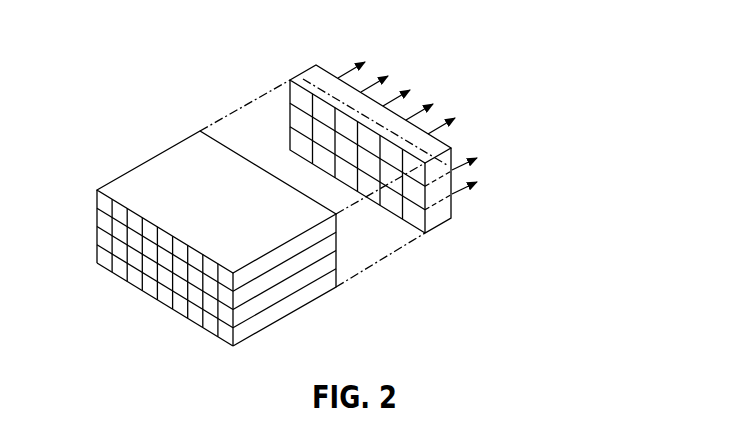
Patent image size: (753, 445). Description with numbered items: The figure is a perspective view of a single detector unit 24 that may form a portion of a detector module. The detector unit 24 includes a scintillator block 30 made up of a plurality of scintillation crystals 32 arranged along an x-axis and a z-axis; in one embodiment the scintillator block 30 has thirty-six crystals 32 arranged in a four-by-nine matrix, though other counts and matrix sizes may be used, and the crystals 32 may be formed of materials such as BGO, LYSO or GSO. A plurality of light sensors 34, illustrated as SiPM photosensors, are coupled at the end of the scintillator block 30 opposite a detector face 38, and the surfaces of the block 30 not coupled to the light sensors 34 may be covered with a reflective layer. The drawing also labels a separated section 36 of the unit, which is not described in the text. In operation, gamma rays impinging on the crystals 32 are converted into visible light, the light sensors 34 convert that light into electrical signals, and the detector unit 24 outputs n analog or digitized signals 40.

The detector unit 24 is at (522, 105).
The scintillator block 30 is at (216, 256).
The scintillation crystals 32 is at (190, 316).
The light sensors 34 is at (383, 190).
The separated layer section 36 is at (355, 189).
The detector face 38 is at (138, 305).
The analog or digitized signals 40 is at (486, 202).